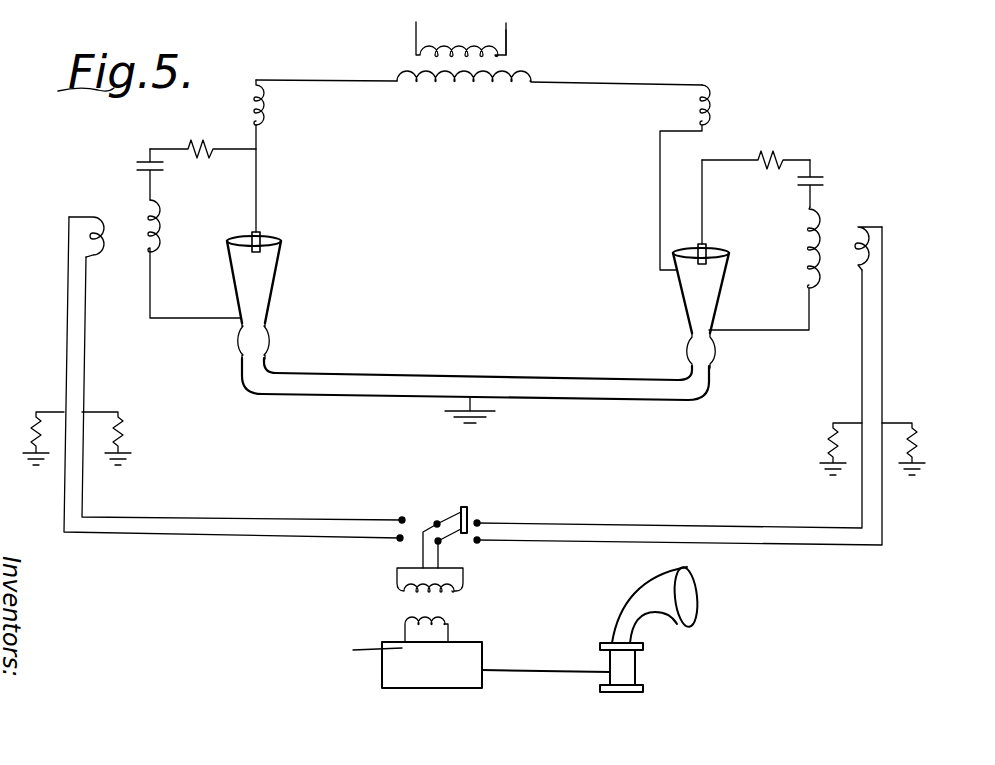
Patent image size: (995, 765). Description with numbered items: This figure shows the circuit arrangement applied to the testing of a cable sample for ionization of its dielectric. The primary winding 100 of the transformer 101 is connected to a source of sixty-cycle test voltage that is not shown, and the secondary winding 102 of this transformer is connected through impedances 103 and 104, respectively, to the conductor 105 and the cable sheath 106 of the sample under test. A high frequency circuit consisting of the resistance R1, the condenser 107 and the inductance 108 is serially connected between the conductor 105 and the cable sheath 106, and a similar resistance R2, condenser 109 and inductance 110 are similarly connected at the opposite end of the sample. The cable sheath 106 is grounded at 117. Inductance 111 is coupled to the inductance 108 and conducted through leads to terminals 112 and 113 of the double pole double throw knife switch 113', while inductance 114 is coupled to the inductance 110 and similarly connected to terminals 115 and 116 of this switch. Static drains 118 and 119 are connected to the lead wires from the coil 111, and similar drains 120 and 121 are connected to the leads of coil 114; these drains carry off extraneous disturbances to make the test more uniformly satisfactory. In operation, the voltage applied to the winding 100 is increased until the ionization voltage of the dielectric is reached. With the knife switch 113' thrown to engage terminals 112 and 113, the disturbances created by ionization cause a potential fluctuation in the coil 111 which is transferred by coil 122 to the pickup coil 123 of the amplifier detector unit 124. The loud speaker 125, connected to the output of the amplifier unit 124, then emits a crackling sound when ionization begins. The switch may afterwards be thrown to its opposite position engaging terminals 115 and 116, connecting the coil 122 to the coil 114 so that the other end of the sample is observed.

The primary winding 100 is at (450, 41).
The transformer 101 is at (507, 59).
The secondary winding 102 is at (462, 84).
The impedance 103 is at (261, 107).
The impedance 104 is at (712, 112).
The conductor 105 is at (262, 238).
The cable sheath 106 is at (258, 318).
The condenser 107 is at (148, 159).
The inductance 108 is at (161, 236).
The condenser 109 is at (818, 172).
The inductance 110 is at (799, 237).
The inductance 111 is at (92, 238).
The terminal 112 is at (402, 518).
The terminal 113 is at (383, 553).
The double pole double throw switch 113' is at (457, 520).
The inductance 114 is at (853, 243).
The terminal 115 is at (480, 521).
The terminal 116 is at (480, 542).
The ground 117 is at (473, 407).
The static drain 118 is at (35, 424).
The static drain 119 is at (123, 436).
The static drain 120 is at (829, 442).
The static drain 121 is at (917, 448).
The coil 122 is at (456, 592).
The pickup coil 123 is at (418, 619).
The amplifier detector unit 124 is at (437, 681).
The loud speaker 125 is at (627, 668).
The resistance R1 is at (203, 134).
The resistance R2 is at (756, 146).